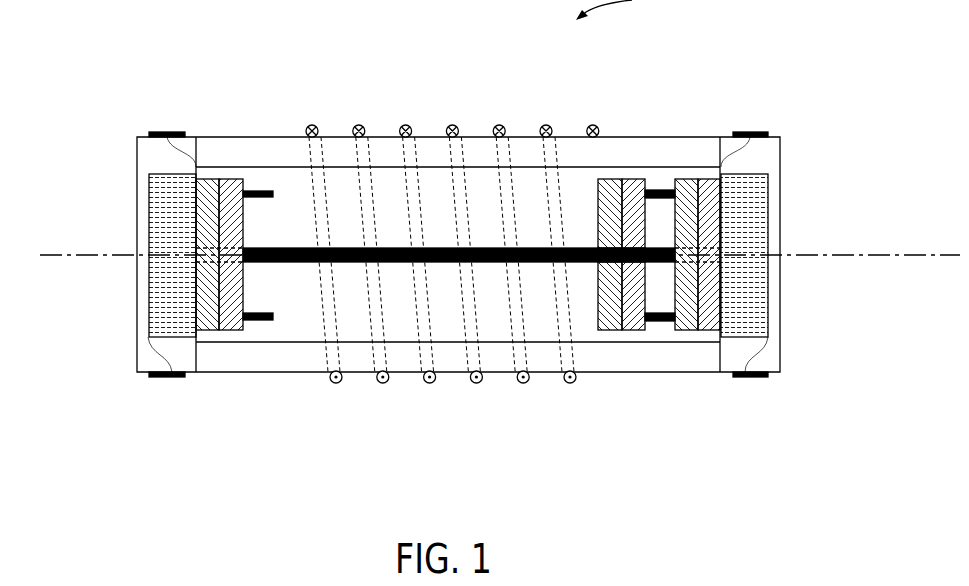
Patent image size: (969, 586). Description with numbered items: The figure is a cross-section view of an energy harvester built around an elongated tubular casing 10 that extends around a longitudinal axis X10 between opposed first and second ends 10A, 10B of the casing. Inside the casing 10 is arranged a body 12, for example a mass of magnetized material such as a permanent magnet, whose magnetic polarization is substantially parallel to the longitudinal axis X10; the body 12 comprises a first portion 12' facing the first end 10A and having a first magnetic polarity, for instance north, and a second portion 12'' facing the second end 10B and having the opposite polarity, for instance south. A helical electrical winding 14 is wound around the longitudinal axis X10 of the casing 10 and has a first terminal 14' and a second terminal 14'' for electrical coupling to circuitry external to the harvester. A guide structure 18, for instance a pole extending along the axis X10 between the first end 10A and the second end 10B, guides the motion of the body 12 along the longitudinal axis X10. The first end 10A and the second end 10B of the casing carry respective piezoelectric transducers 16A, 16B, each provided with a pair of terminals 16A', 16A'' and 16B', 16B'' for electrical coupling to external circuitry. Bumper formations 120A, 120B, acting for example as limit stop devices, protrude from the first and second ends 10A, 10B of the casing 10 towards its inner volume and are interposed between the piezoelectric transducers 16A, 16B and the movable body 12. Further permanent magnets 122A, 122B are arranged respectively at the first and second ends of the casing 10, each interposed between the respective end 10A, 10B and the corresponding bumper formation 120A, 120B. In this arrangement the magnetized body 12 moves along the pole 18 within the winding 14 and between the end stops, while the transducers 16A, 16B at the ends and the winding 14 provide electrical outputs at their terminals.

The casing 10 is at (265, 137).
The first end of the casing 10A is at (148, 155).
The second end of the casing 10B is at (768, 155).
The body 12 is at (618, 316).
The first portion of the body 12' is at (600, 318).
The second portion of the body 12'' is at (648, 318).
The helical electrical winding 14 is at (442, 216).
The first terminal of the electrical winding 14' is at (292, 98).
The second terminal of the electrical winding 14'' is at (572, 98).
The piezoelectric transducer 16A is at (125, 254).
The terminal of the first piezoelectric transducer 16A' is at (152, 92).
The terminal of the first piezoelectric transducer 16A'' is at (151, 421).
The piezoelectric transducer 16B is at (786, 254).
The terminal of the second piezoelectric transducer 16B' is at (764, 93).
The terminal of the second piezoelectric transducer 16B'' is at (769, 419).
The guide structure 18 is at (452, 248).
The bumper formation 120A is at (296, 275).
The bumper formation 120B is at (655, 188).
The permanent magnet 122A is at (225, 333).
The permanent magnet 122B is at (712, 178).
The longitudinal axis X10 is at (84, 264).